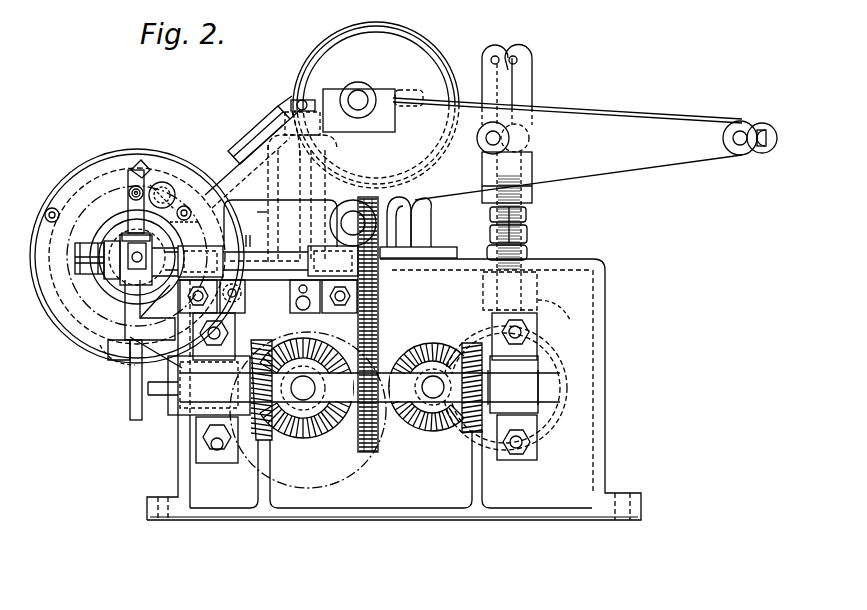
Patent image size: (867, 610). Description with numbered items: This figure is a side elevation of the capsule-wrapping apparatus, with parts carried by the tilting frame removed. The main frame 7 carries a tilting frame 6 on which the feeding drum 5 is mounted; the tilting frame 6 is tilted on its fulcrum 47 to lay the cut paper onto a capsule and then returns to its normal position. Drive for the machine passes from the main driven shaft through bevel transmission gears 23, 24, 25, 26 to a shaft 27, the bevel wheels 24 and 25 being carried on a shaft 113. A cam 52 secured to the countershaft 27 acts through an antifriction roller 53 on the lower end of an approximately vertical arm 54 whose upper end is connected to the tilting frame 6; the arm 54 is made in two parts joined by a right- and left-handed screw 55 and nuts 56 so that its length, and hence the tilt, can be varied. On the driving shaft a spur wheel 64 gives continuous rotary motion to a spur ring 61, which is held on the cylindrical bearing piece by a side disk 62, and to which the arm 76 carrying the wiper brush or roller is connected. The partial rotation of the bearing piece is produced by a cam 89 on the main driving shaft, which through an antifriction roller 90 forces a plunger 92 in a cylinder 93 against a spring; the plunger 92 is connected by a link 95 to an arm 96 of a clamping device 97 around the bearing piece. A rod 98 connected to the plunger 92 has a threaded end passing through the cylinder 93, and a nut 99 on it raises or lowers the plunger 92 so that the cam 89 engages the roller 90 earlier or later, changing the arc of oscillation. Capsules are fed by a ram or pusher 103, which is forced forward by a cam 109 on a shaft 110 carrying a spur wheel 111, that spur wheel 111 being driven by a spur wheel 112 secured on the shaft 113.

The feeding drum 5 is at (376, 105).
The tilting frame 6 is at (585, 149).
The main frame 7 is at (200, 471).
The bevel transmission gear 23 is at (325, 422).
The bevel transmission gear 24 is at (262, 432).
The bevel transmission gear 25 is at (462, 428).
The bevel transmission gear 26 is at (447, 348).
The shaft 27 is at (357, 388).
The fulcrum 47 is at (380, 313).
The cam 52 is at (530, 433).
The antifriction roller 53 is at (560, 300).
The vertical arm 54 is at (487, 194).
The right- and left-handed screw 55 is at (532, 196).
The nuts 56 is at (527, 233).
The spur ring 61 is at (98, 346).
The side disk 62 is at (63, 200).
The spur wheel 64 is at (338, 482).
The arm 76 is at (134, 185).
The cam 89 is at (278, 430).
The antifriction roller 90 is at (248, 305).
The plunger 92 is at (336, 172).
The cylinder 93 is at (280, 198).
The link 95 is at (166, 188).
The arm 96 is at (187, 206).
The clamping device 97 is at (122, 262).
The rod 98 is at (266, 128).
The nut 99 is at (298, 101).
The ram or pusher 103 is at (135, 283).
The cam 109 is at (150, 300).
The shaft 110 is at (311, 254).
The spur wheel 111 is at (389, 290).
The spur wheel 112 is at (376, 445).
The shaft 113 is at (365, 370).